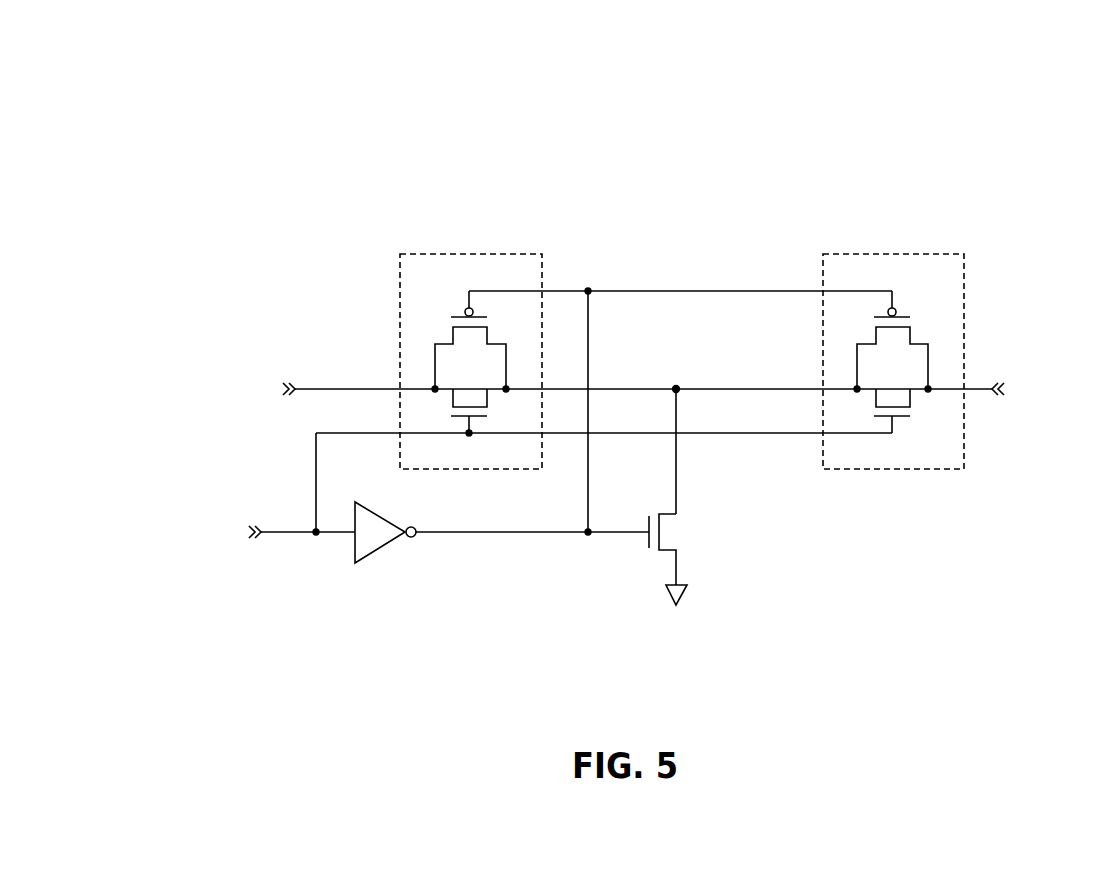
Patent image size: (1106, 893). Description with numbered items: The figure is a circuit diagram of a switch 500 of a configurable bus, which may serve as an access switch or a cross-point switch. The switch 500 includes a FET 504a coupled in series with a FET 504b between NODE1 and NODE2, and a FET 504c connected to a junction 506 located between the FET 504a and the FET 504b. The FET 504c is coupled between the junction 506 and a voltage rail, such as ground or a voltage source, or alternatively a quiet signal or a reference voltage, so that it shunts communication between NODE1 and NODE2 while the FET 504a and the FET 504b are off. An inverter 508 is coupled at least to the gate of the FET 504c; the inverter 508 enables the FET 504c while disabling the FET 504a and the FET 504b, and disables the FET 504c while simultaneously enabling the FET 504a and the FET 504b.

The switch 500 is at (966, 146).
The FET 504a is at (427, 253).
The FET 504b is at (867, 253).
The FET 504c is at (672, 525).
The junction 506 is at (676, 389).
The inverter 508 is at (370, 557).